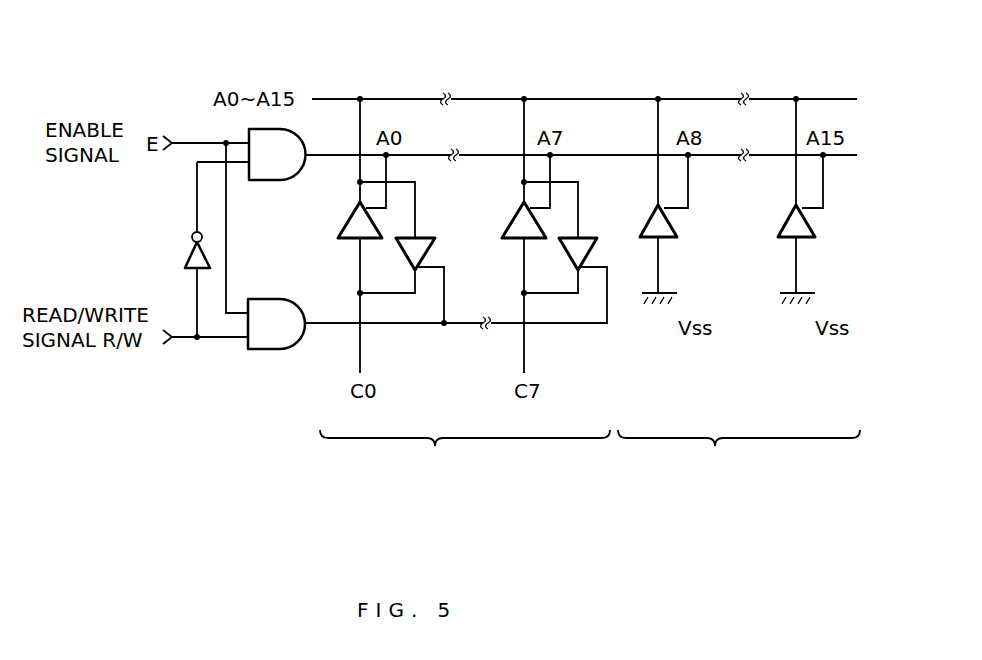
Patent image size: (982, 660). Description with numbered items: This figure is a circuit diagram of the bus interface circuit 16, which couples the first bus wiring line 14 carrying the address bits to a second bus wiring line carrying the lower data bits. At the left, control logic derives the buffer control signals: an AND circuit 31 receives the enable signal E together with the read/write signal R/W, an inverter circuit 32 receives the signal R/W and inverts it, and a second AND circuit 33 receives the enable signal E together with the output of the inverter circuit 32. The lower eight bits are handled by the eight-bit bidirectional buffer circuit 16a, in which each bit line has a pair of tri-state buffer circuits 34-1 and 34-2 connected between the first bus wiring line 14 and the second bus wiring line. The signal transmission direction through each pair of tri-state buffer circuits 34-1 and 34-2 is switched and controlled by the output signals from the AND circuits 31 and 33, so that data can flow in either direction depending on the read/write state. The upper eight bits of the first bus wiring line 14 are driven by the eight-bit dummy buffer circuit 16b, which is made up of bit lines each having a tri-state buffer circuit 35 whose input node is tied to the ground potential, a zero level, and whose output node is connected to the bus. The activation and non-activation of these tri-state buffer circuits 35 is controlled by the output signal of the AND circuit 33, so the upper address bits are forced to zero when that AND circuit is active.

The first bus wiring line 14 is at (347, 97).
The bus interface circuit 16 is at (490, 85).
The 8-bit bidirectional buffer circuit 16a is at (465, 458).
The 8-bit dummy buffer circuit 16b is at (739, 458).
The AND circuit 31 is at (265, 350).
The inverter circuit 32 is at (186, 265).
The AND circuit 33 is at (280, 181).
The tri-state buffer circuit 34-1 is at (430, 234).
The tri-state buffer circuit 34-2 is at (345, 242).
The tri-state buffer circuit 35 is at (670, 240).